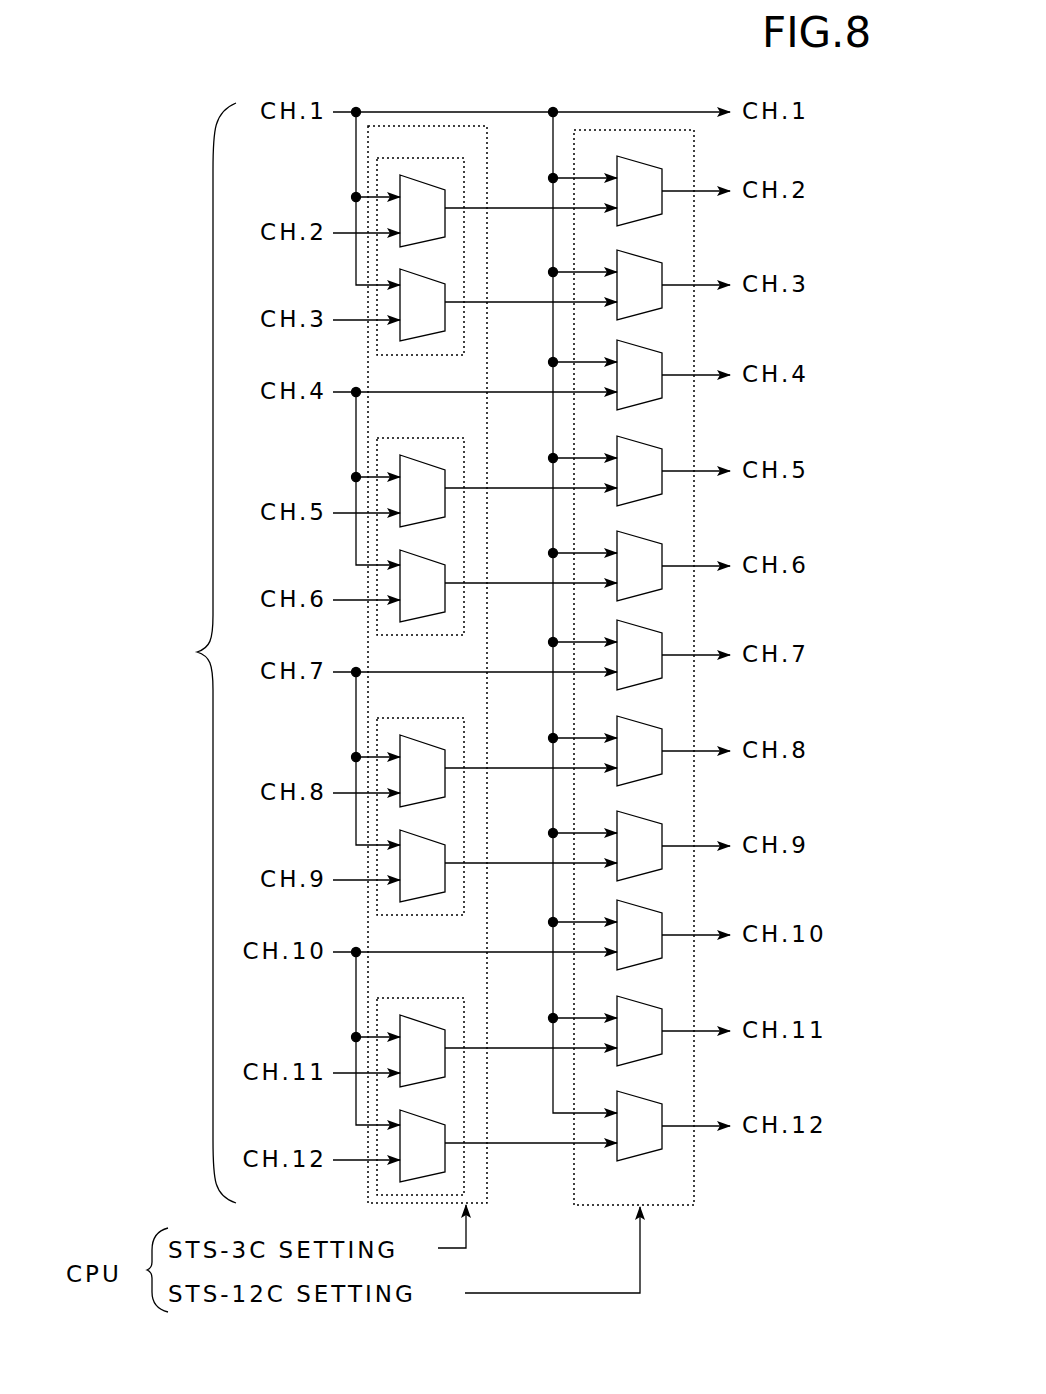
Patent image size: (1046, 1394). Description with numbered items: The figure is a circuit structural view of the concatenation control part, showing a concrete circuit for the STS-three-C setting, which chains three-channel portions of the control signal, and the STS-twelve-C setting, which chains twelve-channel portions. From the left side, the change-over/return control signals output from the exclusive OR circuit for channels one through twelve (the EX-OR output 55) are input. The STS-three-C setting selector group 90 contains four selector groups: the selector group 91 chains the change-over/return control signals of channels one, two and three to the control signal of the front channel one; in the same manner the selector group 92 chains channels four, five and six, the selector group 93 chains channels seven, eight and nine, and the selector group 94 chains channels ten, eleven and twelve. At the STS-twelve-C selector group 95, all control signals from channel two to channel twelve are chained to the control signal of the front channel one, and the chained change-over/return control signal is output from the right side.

The EX-OR output 55 is at (149, 653).
The STS-3C setting selector group 90 is at (487, 166).
The selector group 91 is at (419, 158).
The selector group 92 is at (419, 438).
The selector group 93 is at (419, 718).
The selector group 94 is at (419, 998).
The STS-12C selector group 95 is at (694, 160).